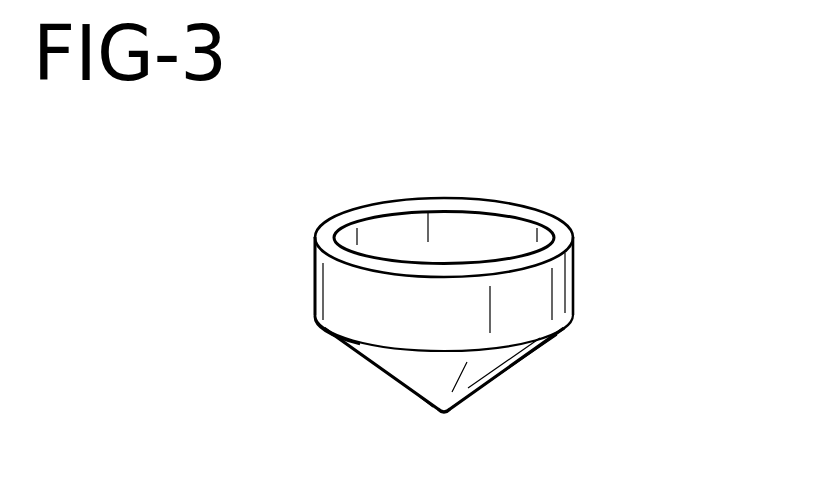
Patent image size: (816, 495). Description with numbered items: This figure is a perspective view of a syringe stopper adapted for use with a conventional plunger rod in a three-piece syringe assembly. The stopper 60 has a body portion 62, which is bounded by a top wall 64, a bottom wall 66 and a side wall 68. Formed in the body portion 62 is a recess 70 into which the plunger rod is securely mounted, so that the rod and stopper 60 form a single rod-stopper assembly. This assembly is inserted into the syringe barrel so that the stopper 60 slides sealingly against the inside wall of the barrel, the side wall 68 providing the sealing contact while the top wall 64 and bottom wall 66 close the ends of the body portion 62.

The stopper 60 is at (455, 275).
The body portion 62 is at (584, 272).
The top wall 64 is at (527, 213).
The bottom wall 66 is at (421, 398).
The side wall 68 is at (313, 308).
The recess 70 is at (448, 227).